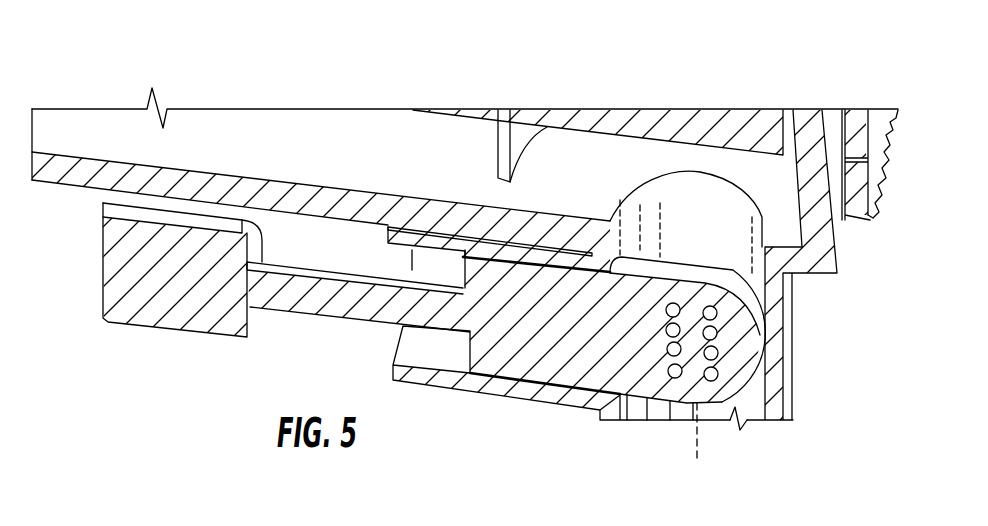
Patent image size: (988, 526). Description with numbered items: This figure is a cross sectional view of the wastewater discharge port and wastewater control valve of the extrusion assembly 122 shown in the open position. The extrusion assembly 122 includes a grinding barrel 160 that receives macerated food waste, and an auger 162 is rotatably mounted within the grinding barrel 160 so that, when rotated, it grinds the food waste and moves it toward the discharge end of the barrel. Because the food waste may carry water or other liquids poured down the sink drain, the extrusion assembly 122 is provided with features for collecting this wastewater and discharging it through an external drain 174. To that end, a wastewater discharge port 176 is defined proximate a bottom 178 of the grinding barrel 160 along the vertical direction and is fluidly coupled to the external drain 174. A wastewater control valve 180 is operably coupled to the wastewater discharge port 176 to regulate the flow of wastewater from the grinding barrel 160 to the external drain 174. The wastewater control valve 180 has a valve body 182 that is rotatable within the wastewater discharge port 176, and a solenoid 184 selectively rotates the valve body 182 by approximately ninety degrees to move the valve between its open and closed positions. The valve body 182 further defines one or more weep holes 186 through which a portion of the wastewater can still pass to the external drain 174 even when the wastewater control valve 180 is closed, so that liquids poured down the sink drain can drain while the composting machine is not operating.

The extrusion assembly 122 is at (424, 58).
The grinding barrel 160 is at (807, 123).
The auger 162 is at (676, 130).
The external drain 174 is at (720, 502).
The wastewater discharge port 176 is at (740, 230).
The bottom 178 is at (303, 190).
The wastewater control valve 180 is at (546, 349).
The valve body 182 is at (745, 373).
The solenoid 184 is at (198, 300).
The weep holes 186 is at (714, 350).